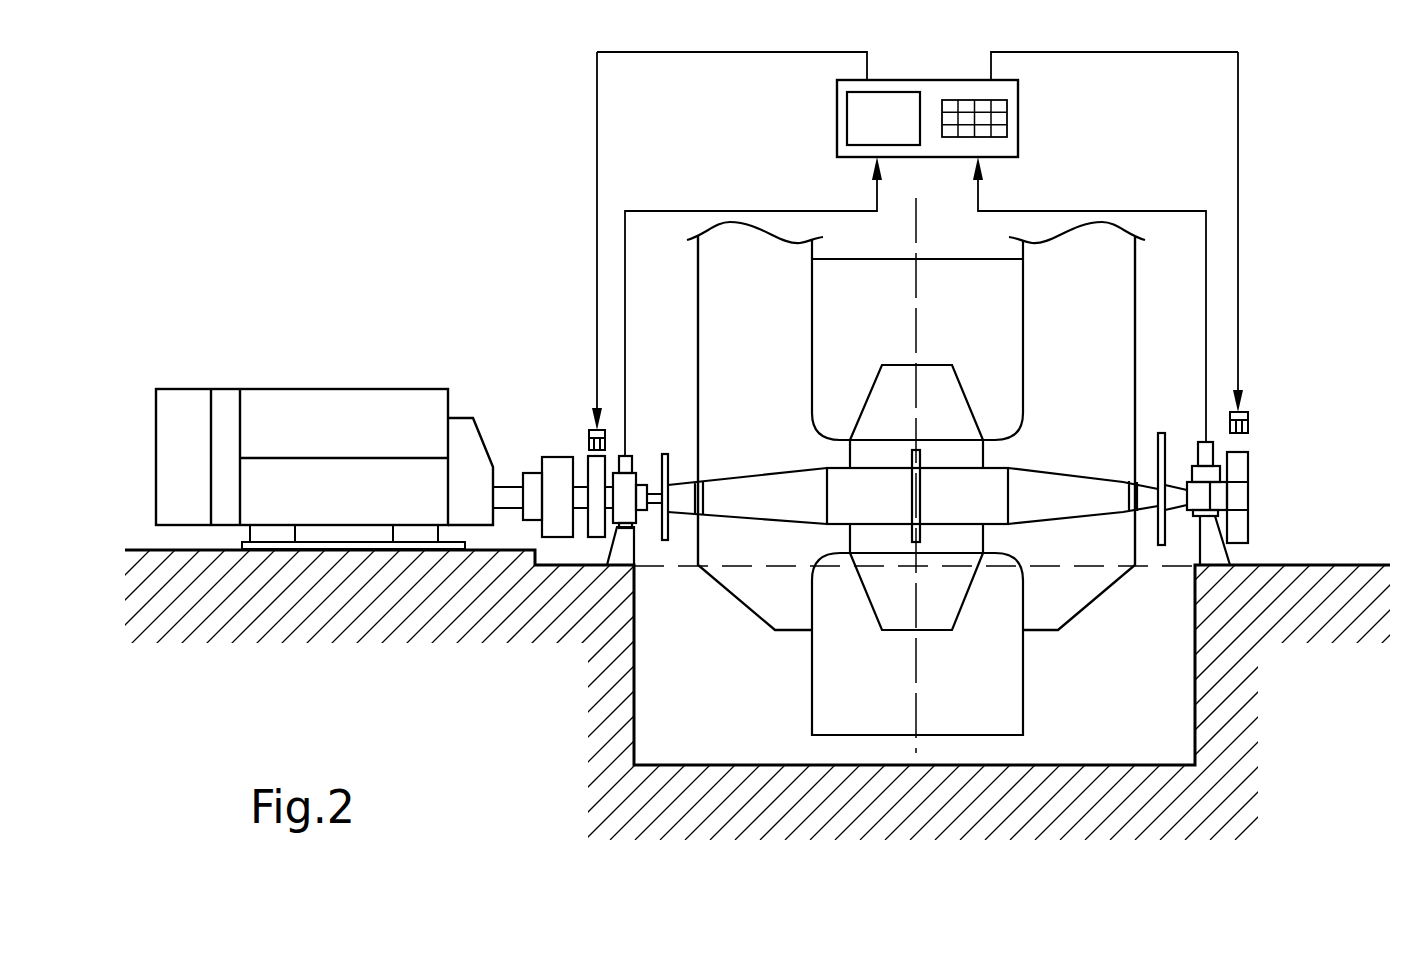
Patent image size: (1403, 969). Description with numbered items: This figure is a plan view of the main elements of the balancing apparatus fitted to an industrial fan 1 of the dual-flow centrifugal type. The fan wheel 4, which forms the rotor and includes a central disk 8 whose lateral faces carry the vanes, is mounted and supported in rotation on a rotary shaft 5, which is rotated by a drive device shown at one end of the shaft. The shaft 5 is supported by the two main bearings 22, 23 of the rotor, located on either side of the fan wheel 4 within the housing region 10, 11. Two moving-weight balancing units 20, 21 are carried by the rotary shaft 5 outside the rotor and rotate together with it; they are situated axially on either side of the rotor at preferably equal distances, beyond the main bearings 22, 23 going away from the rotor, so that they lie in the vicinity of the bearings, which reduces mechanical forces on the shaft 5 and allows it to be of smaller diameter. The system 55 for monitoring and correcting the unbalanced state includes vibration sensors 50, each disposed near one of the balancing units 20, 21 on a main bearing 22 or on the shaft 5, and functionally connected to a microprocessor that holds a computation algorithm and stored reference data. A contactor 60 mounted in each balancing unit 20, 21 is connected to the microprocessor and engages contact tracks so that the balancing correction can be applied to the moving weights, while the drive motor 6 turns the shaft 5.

The fan 1 is at (648, 294).
The fan wheel 4 is at (973, 587).
The rotary shaft 5 is at (507, 492).
The drive motor 6 is at (295, 412).
The central disk 8 is at (913, 607).
The pump housing 10 is at (1113, 313).
The housing wall 11 is at (710, 352).
The balancing unit 20 is at (1246, 470).
The balancing unit 21 is at (595, 465).
The main bearing 22 is at (1188, 516).
The main bearing 23 is at (637, 513).
The vibration sensor 50 is at (632, 457).
The system for monitoring and correcting the unbalanced state 55 is at (933, 93).
The contactor 60 is at (589, 430).